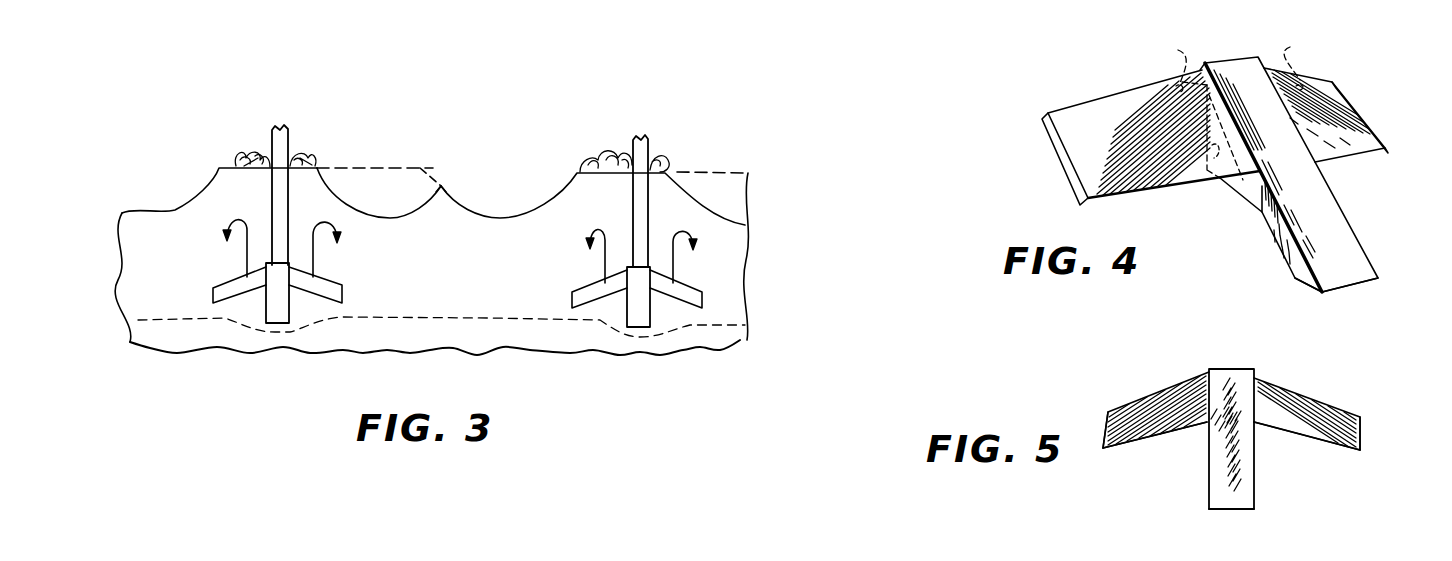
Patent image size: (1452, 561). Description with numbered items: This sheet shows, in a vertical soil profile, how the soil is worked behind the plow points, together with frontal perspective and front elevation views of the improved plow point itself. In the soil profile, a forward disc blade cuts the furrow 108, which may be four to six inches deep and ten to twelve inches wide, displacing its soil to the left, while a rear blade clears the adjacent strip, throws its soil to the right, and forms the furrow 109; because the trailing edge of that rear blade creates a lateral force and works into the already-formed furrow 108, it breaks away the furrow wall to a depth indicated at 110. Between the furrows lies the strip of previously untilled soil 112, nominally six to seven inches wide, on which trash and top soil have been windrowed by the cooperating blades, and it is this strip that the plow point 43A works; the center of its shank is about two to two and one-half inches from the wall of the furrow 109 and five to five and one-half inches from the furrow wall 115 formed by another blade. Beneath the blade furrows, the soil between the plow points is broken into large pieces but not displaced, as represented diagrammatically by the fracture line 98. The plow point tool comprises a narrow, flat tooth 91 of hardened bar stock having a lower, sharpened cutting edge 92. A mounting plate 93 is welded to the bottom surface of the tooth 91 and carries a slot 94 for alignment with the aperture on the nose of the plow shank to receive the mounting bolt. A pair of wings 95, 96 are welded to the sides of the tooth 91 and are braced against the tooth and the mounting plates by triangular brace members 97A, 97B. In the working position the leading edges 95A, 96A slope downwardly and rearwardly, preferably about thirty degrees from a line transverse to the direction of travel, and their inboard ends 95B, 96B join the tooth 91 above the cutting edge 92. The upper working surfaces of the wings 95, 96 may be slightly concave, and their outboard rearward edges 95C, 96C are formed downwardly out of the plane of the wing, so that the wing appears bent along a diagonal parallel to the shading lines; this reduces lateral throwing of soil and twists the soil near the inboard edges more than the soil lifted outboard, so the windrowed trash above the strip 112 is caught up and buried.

In FIG. 3, the plow point 43A is at (288, 316).
In FIG. 4, the tooth 91 is at (1345, 217).
In FIG. 5, the tooth 91 is at (1232, 368).
In FIG. 4, the cutting edge 92 is at (1350, 284).
In FIG. 5, the cutting edge 92 is at (1248, 511).
In FIG. 4, the mounting plate 93 is at (1248, 186).
In FIG. 4, the slot 94 is at (1207, 190).
In FIG. 3, the wing 95 is at (213, 293).
In FIG. 5, the wing 95 is at (1308, 400).
In FIG. 5, the leading edge 95A is at (1342, 450).
In FIG. 5, the inboard end of leading edge 95B is at (1258, 423).
In FIG. 4, the outboard rearward edge 95C is at (1331, 80).
In FIG. 5, the outboard rearward edge 95C is at (1389, 432).
In FIG. 3, the wing 96 is at (340, 290).
In FIG. 5, the wing 96 is at (1142, 398).
In FIG. 5, the leading edge 96A is at (1156, 437).
In FIG. 4, the inboard end of leading edge 96B is at (1082, 84).
In FIG. 5, the inboard end of leading edge 96B is at (1204, 433).
In FIG. 5, the outboard rearward edge 96C is at (1106, 413).
In FIG. 4, the triangular brace member 97A is at (1300, 58).
In FIG. 4, the triangular brace member 97B is at (1159, 67).
In FIG. 3, the fracture line 98 is at (487, 320).
In FIG. 3, the furrow 108 is at (502, 222).
In FIG. 3, the furrow 109 is at (364, 222).
In FIG. 3, the broken-away soil depth 110 is at (443, 203).
In FIG. 3, the untilled strip 112 is at (234, 163).
In FIG. 3, the furrow wall 115 is at (176, 210).